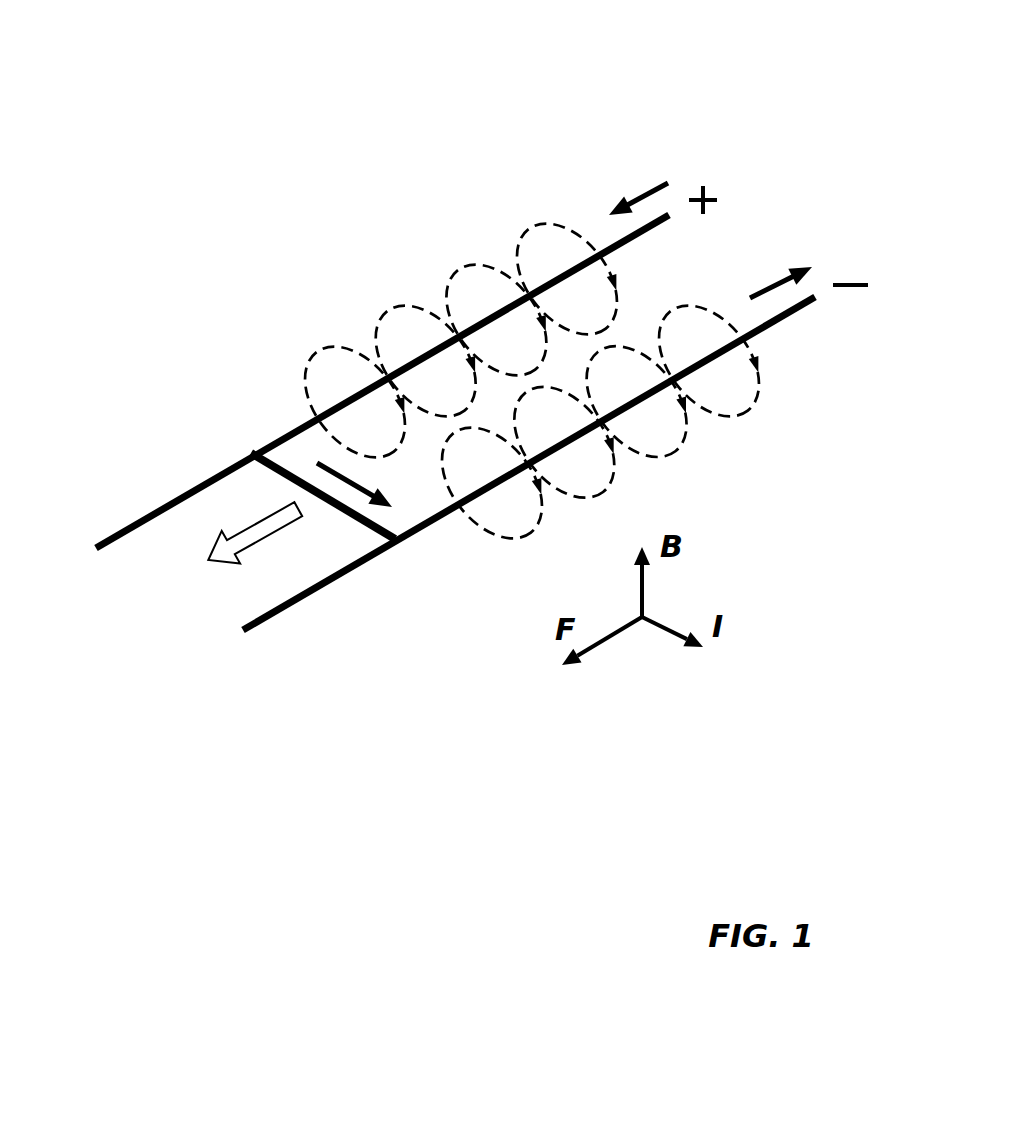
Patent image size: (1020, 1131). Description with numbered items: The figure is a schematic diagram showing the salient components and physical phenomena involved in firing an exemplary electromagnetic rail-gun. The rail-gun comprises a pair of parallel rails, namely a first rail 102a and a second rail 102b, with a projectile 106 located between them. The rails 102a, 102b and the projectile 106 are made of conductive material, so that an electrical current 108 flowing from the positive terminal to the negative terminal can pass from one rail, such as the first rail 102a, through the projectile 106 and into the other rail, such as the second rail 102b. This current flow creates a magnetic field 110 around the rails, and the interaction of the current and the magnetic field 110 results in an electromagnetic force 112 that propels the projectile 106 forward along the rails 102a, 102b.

The Rail-1 102a is at (148, 516).
The Rail-2 102b is at (325, 583).
The projectile 106 is at (279, 464).
The electrical current 108 is at (795, 262).
The magnetic field 110 is at (302, 330).
The force 112 is at (227, 561).